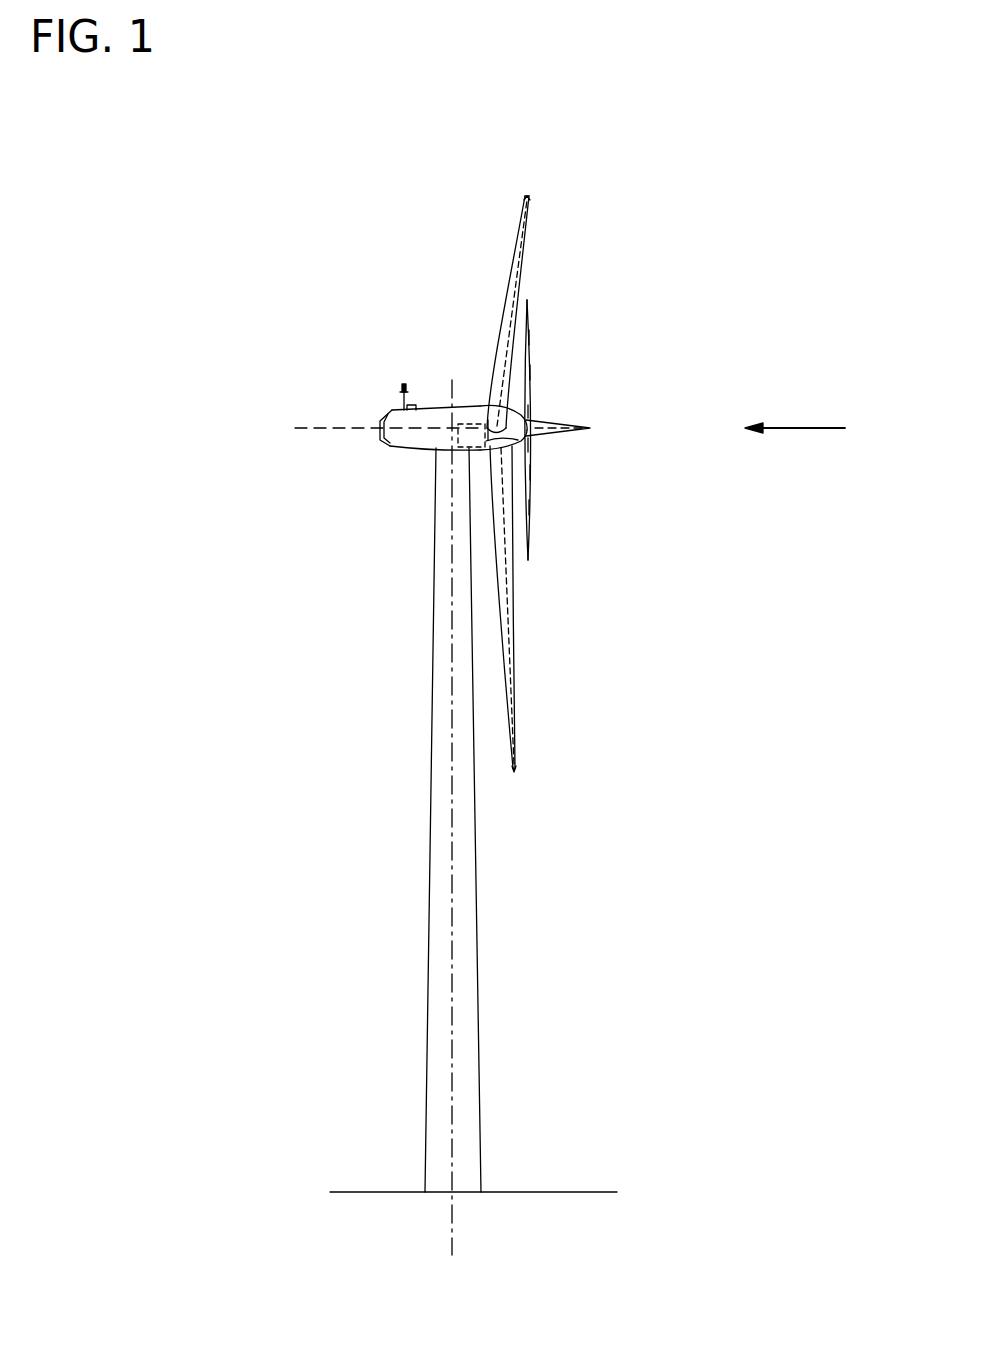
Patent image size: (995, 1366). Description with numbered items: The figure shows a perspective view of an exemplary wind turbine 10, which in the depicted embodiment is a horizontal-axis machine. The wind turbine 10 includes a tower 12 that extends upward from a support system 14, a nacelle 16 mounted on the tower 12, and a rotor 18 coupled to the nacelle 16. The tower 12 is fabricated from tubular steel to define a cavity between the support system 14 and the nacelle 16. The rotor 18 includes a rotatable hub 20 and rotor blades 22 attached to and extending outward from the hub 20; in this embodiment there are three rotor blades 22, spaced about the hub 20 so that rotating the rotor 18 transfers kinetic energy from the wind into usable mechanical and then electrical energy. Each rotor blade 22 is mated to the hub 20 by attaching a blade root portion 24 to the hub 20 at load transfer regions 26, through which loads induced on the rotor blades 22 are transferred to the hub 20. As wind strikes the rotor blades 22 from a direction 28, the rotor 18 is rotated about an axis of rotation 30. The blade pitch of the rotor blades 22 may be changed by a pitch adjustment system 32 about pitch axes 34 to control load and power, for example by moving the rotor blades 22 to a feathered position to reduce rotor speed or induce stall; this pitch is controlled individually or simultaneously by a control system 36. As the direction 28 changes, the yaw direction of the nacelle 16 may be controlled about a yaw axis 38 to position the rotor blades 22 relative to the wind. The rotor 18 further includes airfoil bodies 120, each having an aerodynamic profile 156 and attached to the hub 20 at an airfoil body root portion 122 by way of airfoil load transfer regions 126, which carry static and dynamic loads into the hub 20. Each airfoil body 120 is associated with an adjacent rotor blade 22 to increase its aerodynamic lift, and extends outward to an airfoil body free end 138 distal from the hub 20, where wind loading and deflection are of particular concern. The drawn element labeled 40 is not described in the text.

The wind turbine 10 is at (214, 212).
The tower 12 is at (428, 972).
The support system 14 is at (385, 1190).
The nacelle 16 is at (410, 450).
The rotor 18 is at (668, 290).
The hub 20 is at (488, 420).
The rotor blade 22 is at (533, 243).
The blade root portion 24 is at (492, 416).
The load transfer regions 26 is at (498, 448).
The direction 28 is at (812, 427).
The axis of rotation 30 is at (315, 426).
The pitch adjustment system 32 is at (491, 446).
The pitch axes 34 is at (533, 204).
The control system 36 is at (471, 440).
The yaw axis 38 is at (454, 857).
The drive train 40 is at (466, 424).
The airfoil body 120 is at (531, 338).
The airfoil body root portion 122 is at (529, 412).
The airfoil load transfer regions 126 is at (594, 426).
The airfoil body free end 138 is at (528, 300).
The aerodynamic profile 156 is at (531, 372).